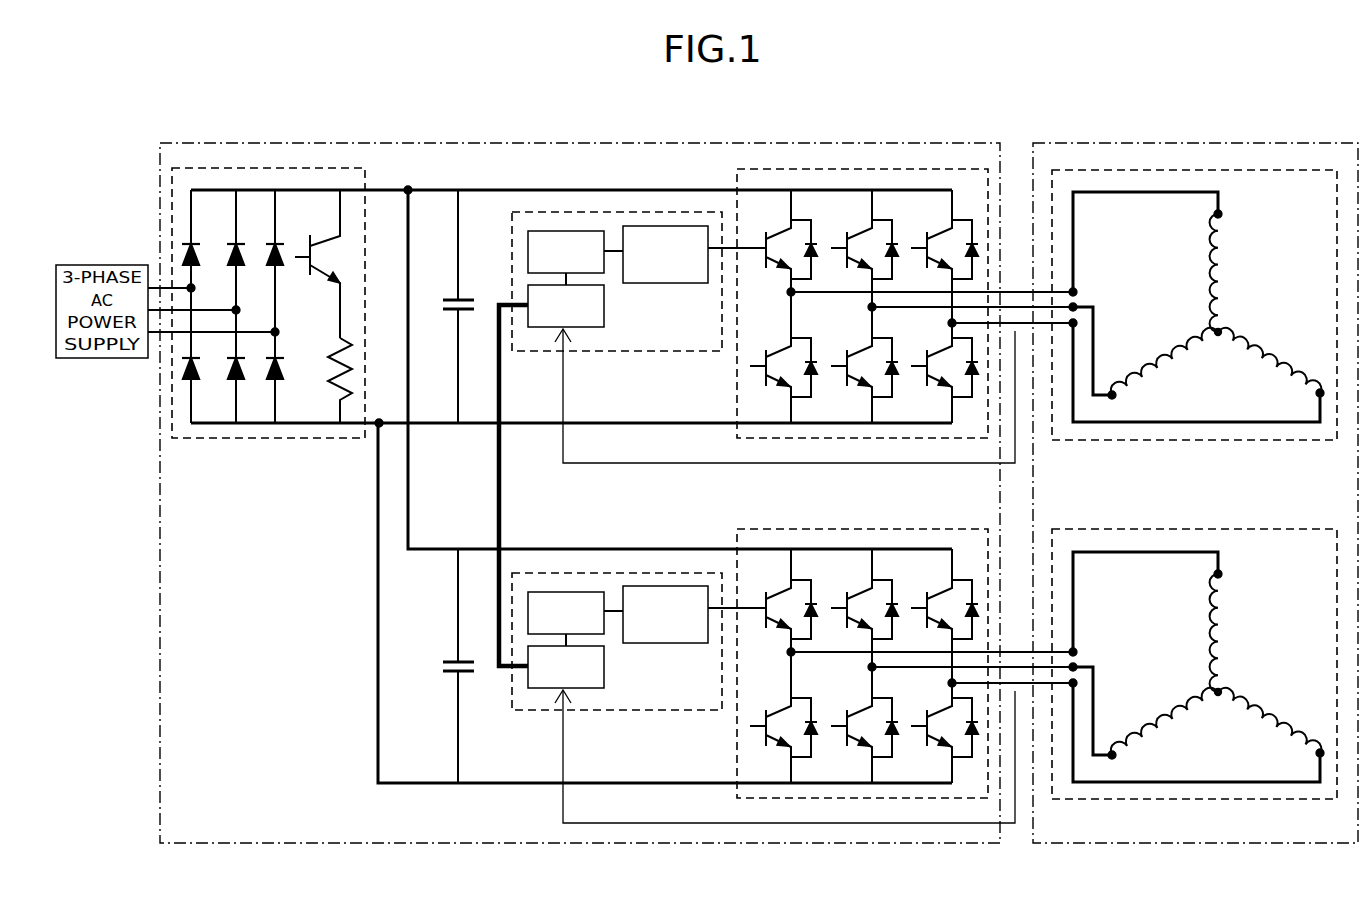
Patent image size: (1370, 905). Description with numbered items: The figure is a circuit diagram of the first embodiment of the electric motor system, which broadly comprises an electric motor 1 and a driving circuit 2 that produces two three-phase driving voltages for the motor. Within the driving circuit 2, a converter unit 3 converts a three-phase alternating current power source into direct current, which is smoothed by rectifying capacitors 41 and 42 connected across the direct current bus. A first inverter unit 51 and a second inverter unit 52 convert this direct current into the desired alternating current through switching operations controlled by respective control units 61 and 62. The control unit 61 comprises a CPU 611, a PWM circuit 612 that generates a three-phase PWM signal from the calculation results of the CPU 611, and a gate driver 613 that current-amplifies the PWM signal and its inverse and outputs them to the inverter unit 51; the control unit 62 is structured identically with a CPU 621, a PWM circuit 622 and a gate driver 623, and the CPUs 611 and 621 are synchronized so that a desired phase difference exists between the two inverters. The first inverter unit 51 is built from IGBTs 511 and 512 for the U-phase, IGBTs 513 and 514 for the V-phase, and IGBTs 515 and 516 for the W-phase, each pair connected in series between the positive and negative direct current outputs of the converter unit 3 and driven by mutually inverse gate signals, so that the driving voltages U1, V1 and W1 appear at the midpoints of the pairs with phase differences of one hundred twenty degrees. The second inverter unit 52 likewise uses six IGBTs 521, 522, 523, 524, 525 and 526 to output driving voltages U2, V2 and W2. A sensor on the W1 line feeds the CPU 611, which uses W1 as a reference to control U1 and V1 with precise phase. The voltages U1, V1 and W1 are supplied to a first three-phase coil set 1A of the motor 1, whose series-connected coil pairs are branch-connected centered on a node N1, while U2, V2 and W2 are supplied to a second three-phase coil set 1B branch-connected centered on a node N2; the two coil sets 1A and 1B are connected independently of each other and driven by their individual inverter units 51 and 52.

The electric motor 1 is at (1093, 143).
The first three-phase coil set 1A is at (1278, 170).
The second three-phase coil set 1B is at (1278, 529).
The driving circuit 2 is at (192, 143).
The converter unit 3 is at (250, 168).
The rectifying capacitor 41 is at (445, 296).
The rectifying capacitor 42 is at (445, 658).
The first inverter unit 51 is at (738, 169).
The second inverter unit 52 is at (740, 530).
The control unit 61 is at (540, 212).
The control unit 62 is at (540, 573).
The CPU 611 is at (604, 300).
The PWM circuit 612 is at (585, 231).
The gate driver 613 is at (648, 226).
The CPU 621 is at (604, 662).
The PWM circuit 622 is at (585, 592).
The gate driver 623 is at (648, 586).
The IGBT 511 is at (767, 234).
The IGBT 512 is at (750, 366).
The IGBT 513 is at (847, 234).
The IGBT 514 is at (847, 362).
The IGBT 515 is at (927, 234).
The IGBT 516 is at (927, 362).
The IGBT 521 is at (767, 594).
The IGBT 522 is at (750, 726).
The IGBT 523 is at (847, 594).
The IGBT 524 is at (847, 722).
The IGBT 525 is at (927, 594).
The IGBT 526 is at (927, 722).
The driving voltage U1 is at (820, 294).
The driving voltage V1 is at (878, 309).
The driving voltage W1 is at (1032, 325).
The driving voltage U2 is at (820, 655).
The driving voltage V2 is at (878, 669).
The driving voltage W2 is at (1032, 685).
The node N1 is at (1220, 330).
The node N2 is at (1220, 690).